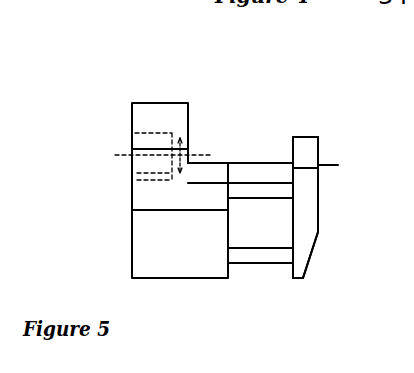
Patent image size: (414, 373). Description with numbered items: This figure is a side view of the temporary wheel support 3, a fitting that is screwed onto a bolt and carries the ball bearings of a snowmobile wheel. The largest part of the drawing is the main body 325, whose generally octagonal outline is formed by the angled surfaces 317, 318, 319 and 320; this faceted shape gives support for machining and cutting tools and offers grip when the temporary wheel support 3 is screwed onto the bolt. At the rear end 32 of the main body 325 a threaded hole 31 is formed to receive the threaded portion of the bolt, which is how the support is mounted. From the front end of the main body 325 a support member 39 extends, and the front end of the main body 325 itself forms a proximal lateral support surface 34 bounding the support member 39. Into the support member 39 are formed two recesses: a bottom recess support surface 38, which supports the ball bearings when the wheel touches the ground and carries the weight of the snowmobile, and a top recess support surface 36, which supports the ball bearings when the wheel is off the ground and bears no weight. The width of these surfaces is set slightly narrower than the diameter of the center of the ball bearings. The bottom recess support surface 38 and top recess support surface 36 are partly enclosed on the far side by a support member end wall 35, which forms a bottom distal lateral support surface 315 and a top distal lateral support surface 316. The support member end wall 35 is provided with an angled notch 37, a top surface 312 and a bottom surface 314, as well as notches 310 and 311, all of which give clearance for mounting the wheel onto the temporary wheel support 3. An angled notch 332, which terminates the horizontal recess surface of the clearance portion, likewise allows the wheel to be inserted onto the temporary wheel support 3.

The temporary wheel support 3 is at (150, 280).
The threaded hole 31 is at (150, 163).
The rear end 32 is at (133, 105).
The proximal lateral support surface 34 is at (230, 173).
The support member end wall 35 is at (338, 165).
The top recess support surface 36 is at (273, 190).
The angled notch 37 is at (312, 253).
The bottom recess support surface 38 is at (253, 265).
The support member 39 is at (262, 232).
The notch 310 is at (297, 263).
The notch 311 is at (300, 145).
The top surface 312 is at (313, 137).
The bottom surface 314 is at (293, 278).
The bottom distal lateral support surface 315 is at (285, 267).
The top distal lateral support surface 316 is at (293, 138).
The angled surface 317 is at (140, 118).
The angled surface 318 is at (143, 197).
The angled surface 319 is at (152, 258).
The angled surface 320 is at (143, 103).
The main body 325 is at (160, 98).
The angled notch 332 is at (217, 170).